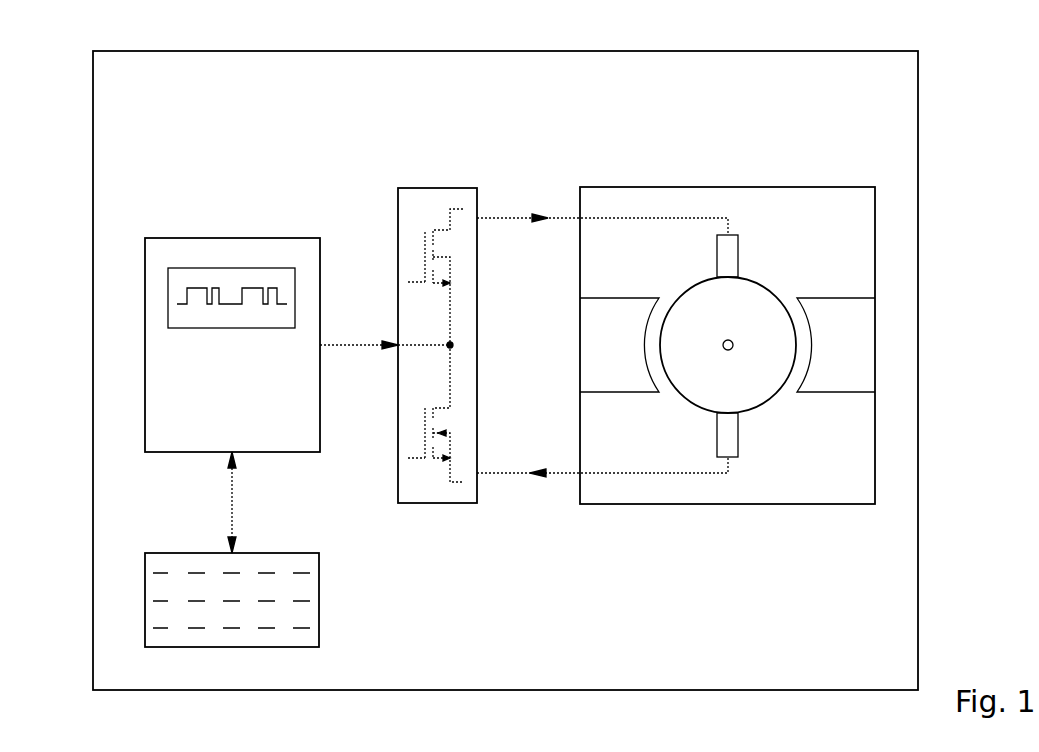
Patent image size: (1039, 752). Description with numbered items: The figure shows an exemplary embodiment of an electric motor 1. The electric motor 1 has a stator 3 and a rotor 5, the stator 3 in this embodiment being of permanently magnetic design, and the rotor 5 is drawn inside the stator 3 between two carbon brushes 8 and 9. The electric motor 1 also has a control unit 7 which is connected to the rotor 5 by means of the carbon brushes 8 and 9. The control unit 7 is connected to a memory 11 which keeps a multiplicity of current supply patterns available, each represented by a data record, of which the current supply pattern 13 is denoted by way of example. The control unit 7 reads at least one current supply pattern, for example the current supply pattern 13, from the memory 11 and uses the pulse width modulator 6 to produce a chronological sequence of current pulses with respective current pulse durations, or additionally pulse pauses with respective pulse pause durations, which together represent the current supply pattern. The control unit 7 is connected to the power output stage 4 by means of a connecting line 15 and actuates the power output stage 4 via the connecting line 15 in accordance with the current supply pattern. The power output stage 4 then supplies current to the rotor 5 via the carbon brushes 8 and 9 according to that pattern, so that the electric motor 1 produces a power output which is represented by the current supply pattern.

The electric motor 1 is at (93, 370).
The stator 3 is at (727, 187).
The power output stage 4 is at (437, 188).
The rotor 5 is at (688, 289).
The pulse width modulator 6 is at (232, 328).
The control unit 7 is at (230, 238).
The carbon brush 8 is at (738, 255).
The carbon brush 9 is at (738, 432).
The memory 11 is at (264, 616).
The current supply pattern 13 is at (198, 628).
The connecting line 15 is at (352, 345).